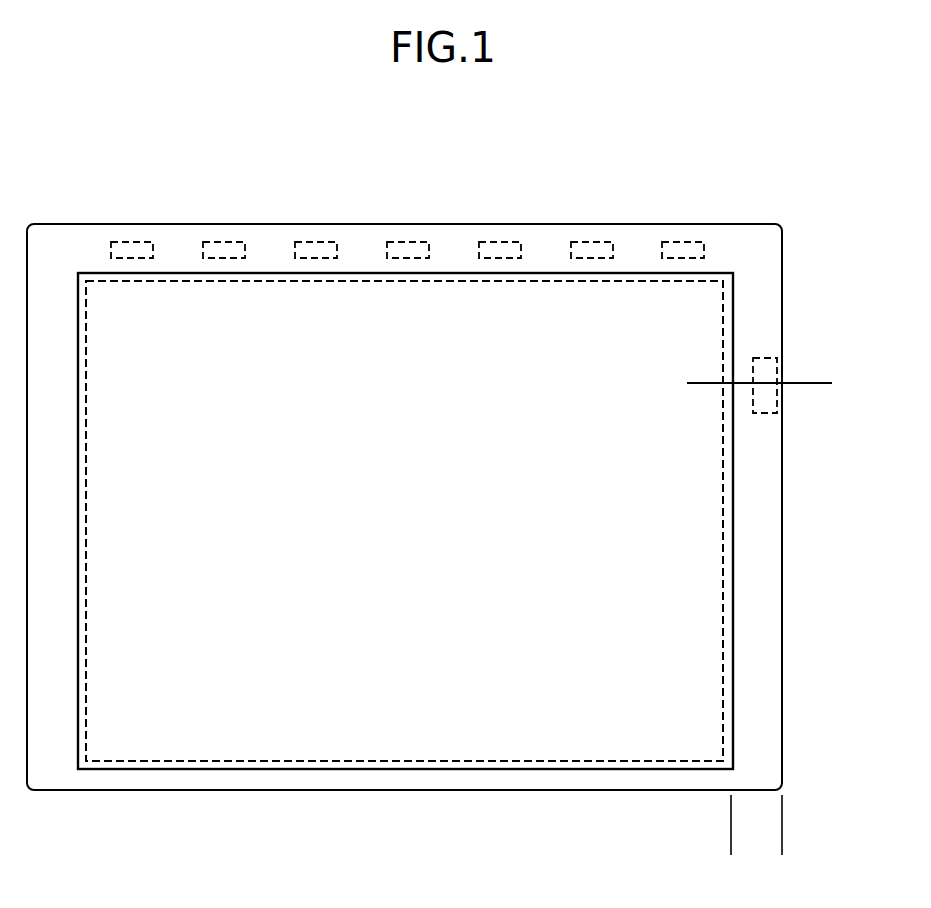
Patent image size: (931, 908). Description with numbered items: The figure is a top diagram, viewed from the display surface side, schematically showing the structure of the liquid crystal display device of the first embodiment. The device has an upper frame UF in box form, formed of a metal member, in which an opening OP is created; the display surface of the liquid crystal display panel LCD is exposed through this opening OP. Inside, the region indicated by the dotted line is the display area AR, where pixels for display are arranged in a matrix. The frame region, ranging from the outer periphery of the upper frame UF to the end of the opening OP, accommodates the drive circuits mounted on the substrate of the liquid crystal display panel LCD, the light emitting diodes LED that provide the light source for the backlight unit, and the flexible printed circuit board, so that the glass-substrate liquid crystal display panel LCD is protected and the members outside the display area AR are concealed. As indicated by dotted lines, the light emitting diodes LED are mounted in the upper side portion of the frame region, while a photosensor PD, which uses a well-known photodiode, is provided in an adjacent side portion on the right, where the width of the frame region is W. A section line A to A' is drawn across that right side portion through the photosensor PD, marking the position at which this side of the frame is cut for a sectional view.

The light emitting diodes LED is at (135, 248).
The upper frame UF is at (540, 783).
The opening OP is at (189, 769).
The display area AR is at (425, 762).
The liquid crystal display panel LCD is at (304, 710).
The photosensor PD is at (770, 403).
The section line A is at (742, 362).
The section line A prime A' is at (778, 362).
The width of the frame region W is at (817, 822).